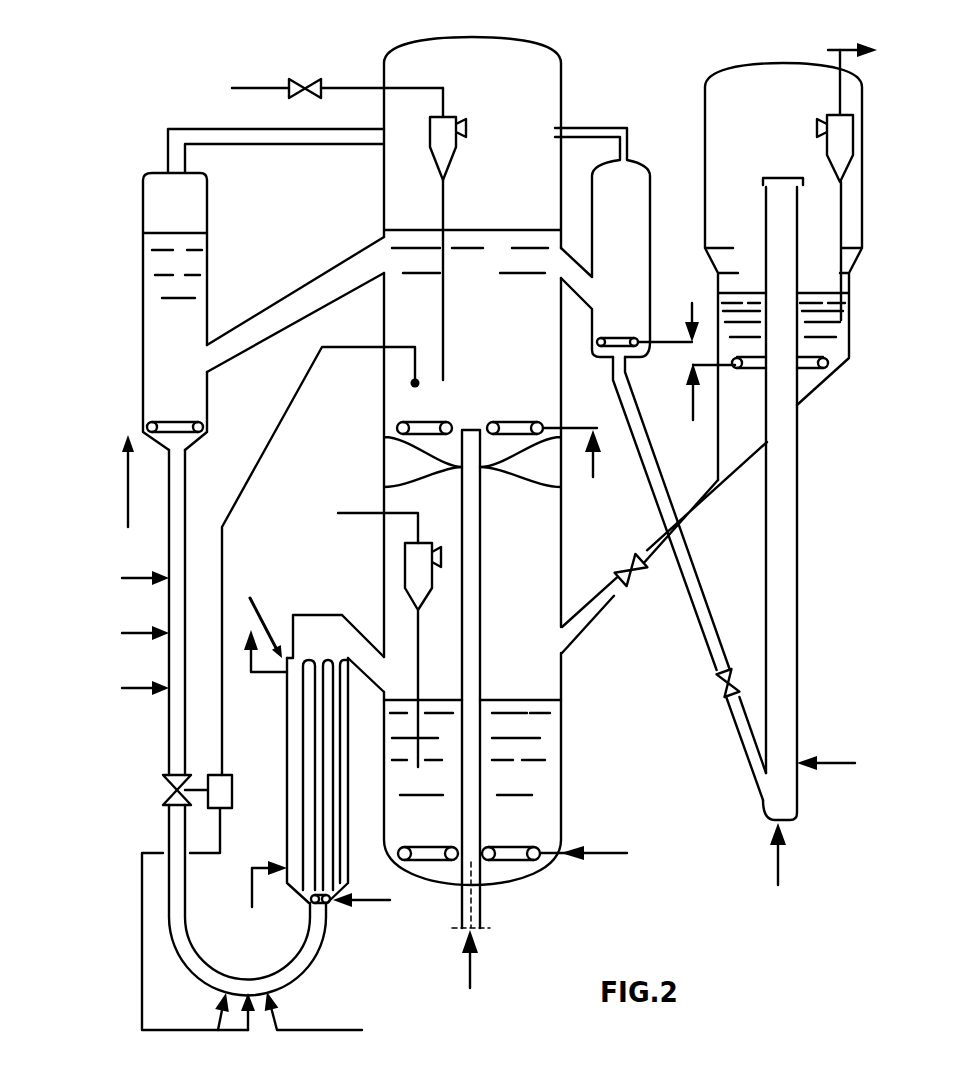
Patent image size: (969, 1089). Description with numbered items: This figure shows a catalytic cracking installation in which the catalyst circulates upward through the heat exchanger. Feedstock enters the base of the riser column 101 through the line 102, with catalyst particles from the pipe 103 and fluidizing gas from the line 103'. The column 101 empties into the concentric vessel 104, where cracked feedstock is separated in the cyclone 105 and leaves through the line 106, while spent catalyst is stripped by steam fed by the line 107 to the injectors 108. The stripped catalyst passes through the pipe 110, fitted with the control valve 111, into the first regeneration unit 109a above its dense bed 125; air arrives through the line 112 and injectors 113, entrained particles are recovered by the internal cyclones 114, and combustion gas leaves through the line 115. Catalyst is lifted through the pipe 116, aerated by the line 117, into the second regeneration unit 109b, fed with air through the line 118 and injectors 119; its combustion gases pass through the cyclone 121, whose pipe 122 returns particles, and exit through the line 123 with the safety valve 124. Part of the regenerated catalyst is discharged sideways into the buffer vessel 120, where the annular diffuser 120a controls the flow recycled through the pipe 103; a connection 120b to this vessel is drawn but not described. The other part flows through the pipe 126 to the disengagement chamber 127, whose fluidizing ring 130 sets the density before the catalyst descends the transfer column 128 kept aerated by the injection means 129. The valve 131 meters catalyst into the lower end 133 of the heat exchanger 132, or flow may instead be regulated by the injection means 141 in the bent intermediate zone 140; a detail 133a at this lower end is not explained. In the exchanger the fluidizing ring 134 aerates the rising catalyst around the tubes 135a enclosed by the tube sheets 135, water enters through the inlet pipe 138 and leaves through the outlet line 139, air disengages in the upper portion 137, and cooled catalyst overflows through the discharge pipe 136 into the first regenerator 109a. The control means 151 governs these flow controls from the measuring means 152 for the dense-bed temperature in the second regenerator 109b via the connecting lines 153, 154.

The column 101 is at (785, 505).
The line 102 is at (855, 763).
The line 103 is at (689, 578).
The line 103' is at (807, 854).
The vessel 104 is at (760, 62).
The cyclone 105 is at (835, 115).
The line 106 is at (828, 50).
The line 107 is at (693, 416).
The injectors 108 is at (822, 369).
The first regeneration unit 109a is at (420, 870).
The second regeneration unit 109b is at (413, 43).
The pipe 110 is at (693, 508).
The control valve 111 is at (633, 577).
The line 112 is at (590, 856).
The injectors 113 is at (537, 860).
The internal cyclones 114 is at (405, 560).
The line 115 is at (357, 513).
The pipe 116 is at (481, 538).
The line 117 is at (472, 962).
The line 118 is at (593, 477).
The injectors 119 is at (538, 423).
The buffer vessel 120 is at (630, 185).
The annular diffuser 120a is at (638, 350).
The gas inlet 120b is at (692, 303).
The cyclone 121 is at (430, 155).
The pipe 122 is at (445, 208).
The line 123 is at (263, 88).
The safety valve 124 is at (305, 79).
The dense bed 125 is at (537, 700).
The pipe 126 is at (303, 300).
The disengagement chamber 127 is at (208, 193).
The vertical tubular transfer column 128 is at (178, 499).
The injection means 129 is at (311, 1030).
The fluidizing ring 130 is at (210, 425).
The valve 131 is at (167, 787).
The heat exchanger 132 is at (255, 612).
The lower end 133 is at (310, 898).
The distributor openings 133a is at (316, 904).
The fluidizing ring 134 is at (337, 906).
The tube sheets 135 is at (287, 742).
The tubes 135a is at (310, 770).
The discharge pipe 136 is at (360, 650).
The upper portion 137 is at (308, 623).
The water inlet pipe 138 is at (252, 866).
The outlet line 139 is at (265, 672).
The bent intermediate zone 140 is at (186, 944).
The injection means 141 is at (219, 1023).
The control means 151 is at (233, 792).
The measuring means 152 is at (412, 383).
The connecting line 153 is at (273, 440).
The connecting line 154 is at (142, 863).